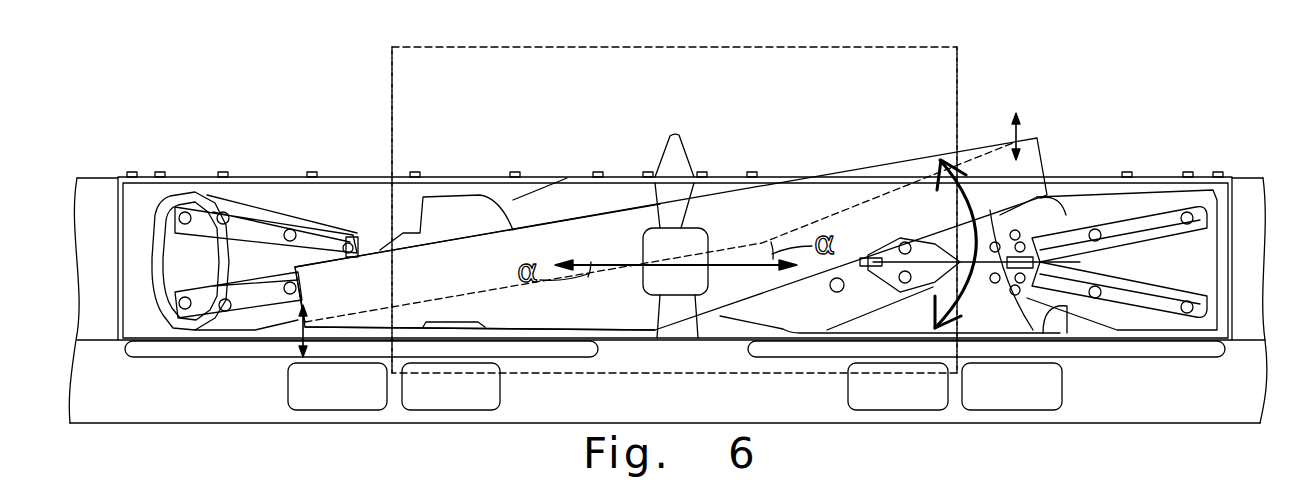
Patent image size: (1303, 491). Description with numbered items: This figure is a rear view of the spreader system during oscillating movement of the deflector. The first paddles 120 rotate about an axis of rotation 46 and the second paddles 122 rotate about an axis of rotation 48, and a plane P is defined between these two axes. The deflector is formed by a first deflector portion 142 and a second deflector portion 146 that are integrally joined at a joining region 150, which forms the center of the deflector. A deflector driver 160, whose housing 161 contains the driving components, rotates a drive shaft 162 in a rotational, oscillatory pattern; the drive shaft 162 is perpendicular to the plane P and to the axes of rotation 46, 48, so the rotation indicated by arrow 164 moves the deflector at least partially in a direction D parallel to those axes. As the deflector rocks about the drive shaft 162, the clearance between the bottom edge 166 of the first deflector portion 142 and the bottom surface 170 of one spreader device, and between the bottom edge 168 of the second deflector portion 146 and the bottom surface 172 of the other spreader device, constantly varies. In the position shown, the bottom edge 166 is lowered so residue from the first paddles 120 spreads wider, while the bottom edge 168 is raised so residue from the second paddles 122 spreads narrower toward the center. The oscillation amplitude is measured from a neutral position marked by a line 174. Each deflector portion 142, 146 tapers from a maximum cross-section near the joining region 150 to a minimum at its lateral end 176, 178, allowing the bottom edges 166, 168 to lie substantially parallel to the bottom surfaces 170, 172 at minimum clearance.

The axis of rotation 46 is at (392, 93).
The axis of rotation 48 is at (957, 62).
The first paddles 120 is at (428, 218).
The second paddles 122 is at (1113, 200).
The first deflector portion 142 is at (460, 273).
The second deflector portion 146 is at (897, 190).
The joining region 150 is at (657, 225).
The deflector driver 160 is at (683, 131).
The housing 161 is at (683, 160).
The drive shaft 162 is at (690, 244).
The arrow 164 is at (941, 158).
The bottom edge 166 is at (560, 327).
The bottom edge 168 is at (868, 257).
The bottom surface 170 is at (247, 347).
The bottom surface 172 is at (1025, 347).
The line 174 is at (628, 265).
The lateral end 176 is at (300, 301).
The lateral end 178 is at (1043, 165).
The plane P is at (818, 47).
The direction D is at (1018, 138).